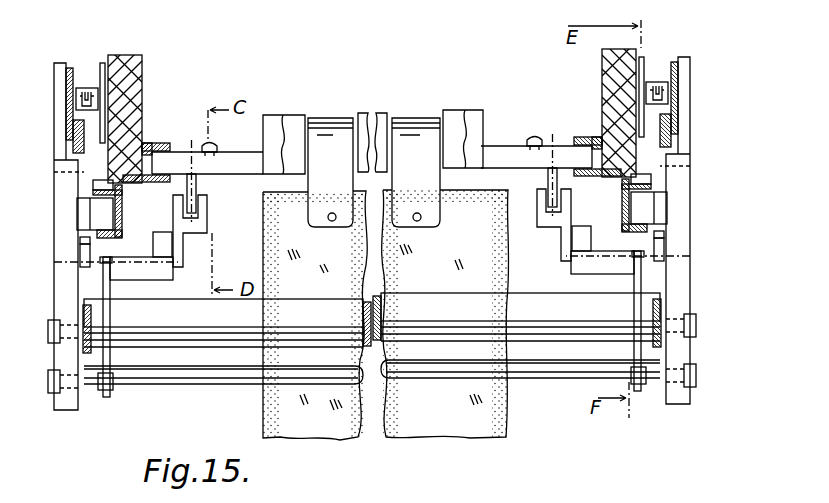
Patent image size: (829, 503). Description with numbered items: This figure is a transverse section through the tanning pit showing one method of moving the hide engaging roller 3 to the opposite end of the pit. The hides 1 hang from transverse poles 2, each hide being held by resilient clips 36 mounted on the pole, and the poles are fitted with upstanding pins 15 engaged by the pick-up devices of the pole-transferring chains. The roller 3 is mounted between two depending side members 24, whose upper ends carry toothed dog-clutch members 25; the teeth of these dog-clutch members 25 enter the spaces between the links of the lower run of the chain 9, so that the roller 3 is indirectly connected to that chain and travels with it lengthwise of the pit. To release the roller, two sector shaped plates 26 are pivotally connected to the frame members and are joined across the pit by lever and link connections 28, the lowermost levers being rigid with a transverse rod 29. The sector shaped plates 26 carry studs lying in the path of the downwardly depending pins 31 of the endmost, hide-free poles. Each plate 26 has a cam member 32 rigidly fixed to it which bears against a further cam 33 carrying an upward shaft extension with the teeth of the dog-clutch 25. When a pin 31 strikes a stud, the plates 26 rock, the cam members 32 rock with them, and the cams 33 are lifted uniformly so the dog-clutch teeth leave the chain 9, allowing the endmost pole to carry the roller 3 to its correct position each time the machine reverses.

The hide 1 is at (398, 424).
The pole 2 is at (382, 114).
The roller 3 is at (421, 308).
The chain 9 is at (82, 104).
The upstanding pin 15 is at (531, 141).
The depending side member 24 is at (66, 213).
The dog-clutch member 25 is at (88, 86).
The sector shaped plate 26 is at (198, 233).
The lever and link connection 28 is at (112, 295).
The transverse rod 29 is at (245, 384).
The downwardly depending pin 31 is at (194, 189).
The cam member 32 is at (90, 252).
The cam 33 is at (88, 241).
The clip 36 is at (422, 133).